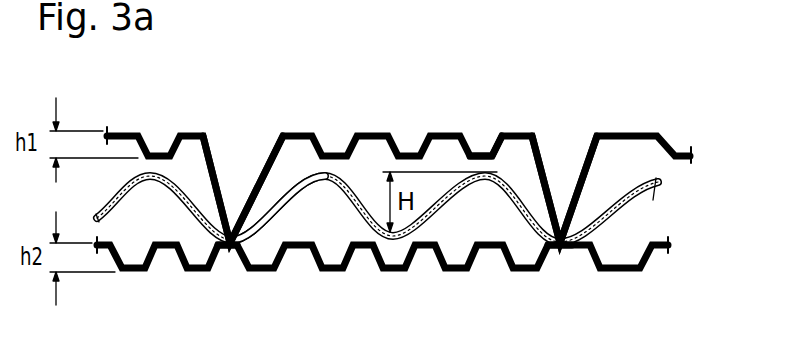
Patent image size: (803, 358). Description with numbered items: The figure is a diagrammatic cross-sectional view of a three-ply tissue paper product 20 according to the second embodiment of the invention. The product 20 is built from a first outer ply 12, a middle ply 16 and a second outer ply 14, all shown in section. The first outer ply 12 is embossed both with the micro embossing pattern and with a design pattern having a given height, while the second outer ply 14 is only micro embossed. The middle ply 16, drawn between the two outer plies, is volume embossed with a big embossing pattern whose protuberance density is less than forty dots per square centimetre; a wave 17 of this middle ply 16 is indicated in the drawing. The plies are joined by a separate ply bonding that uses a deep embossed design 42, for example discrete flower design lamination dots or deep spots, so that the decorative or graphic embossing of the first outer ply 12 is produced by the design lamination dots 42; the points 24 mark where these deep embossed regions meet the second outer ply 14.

The first outer ply 12 is at (670, 130).
The second outer ply 14 is at (659, 267).
The middle ply 16 is at (666, 180).
The wave of intermediate layer 17 is at (283, 204).
The product 20 is at (482, 108).
The contact points 24 is at (225, 254).
The deep embossed design 42 is at (256, 190).